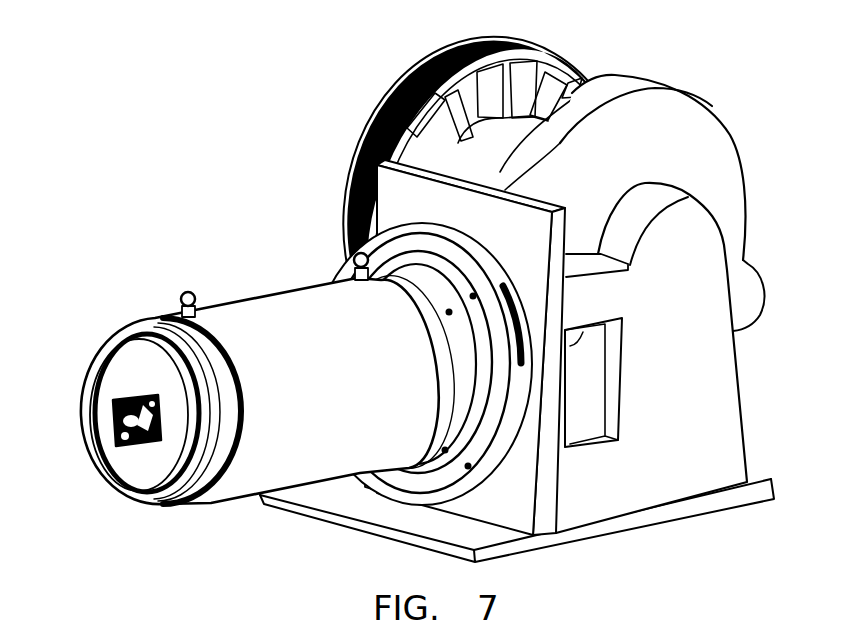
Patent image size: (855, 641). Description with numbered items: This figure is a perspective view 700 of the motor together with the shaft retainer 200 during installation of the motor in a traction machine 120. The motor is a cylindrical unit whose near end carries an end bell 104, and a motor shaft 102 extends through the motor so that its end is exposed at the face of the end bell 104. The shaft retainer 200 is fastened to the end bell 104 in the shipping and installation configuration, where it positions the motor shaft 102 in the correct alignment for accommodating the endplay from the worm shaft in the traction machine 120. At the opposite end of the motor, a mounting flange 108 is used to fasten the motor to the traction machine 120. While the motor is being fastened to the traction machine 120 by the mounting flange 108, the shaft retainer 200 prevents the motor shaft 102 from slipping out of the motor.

The perspective view 700 is at (426, 304).
The motor shaft 102 is at (116, 432).
The end bell 104 is at (150, 492).
The mounting flange 108 is at (430, 465).
The traction machine 120 is at (738, 410).
The shaft retainer 200 is at (138, 397).